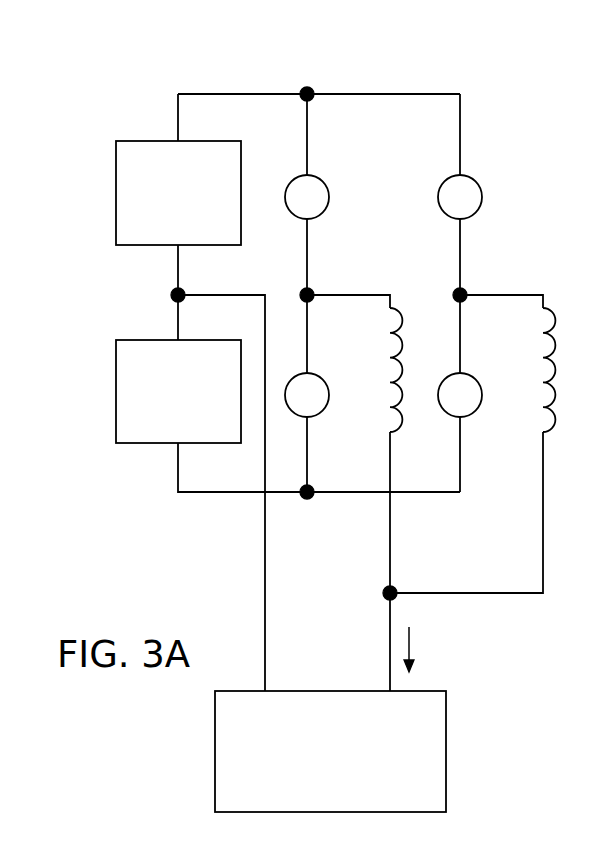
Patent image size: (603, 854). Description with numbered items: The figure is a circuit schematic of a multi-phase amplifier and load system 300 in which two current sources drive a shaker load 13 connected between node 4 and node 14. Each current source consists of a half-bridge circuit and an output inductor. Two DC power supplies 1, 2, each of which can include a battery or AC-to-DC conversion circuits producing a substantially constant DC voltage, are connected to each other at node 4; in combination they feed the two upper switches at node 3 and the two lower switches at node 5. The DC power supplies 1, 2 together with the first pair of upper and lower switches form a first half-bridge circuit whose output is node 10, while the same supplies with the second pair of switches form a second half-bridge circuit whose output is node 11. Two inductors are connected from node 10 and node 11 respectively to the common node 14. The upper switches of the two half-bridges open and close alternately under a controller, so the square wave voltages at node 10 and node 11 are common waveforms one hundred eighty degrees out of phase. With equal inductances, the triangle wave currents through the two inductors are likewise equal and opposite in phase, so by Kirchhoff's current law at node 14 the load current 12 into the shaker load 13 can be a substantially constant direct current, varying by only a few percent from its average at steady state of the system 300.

The multi-phase amplifier and load system 300 is at (133, 108).
The DC power supply 1 is at (165, 191).
The DC power supply 2 is at (164, 389).
The node 3 is at (299, 83).
The node 4 is at (168, 295).
The node 5 is at (300, 502).
The node 10 is at (303, 291).
The node 11 is at (455, 291).
The load current 12 is at (424, 649).
The shaker load 13 is at (347, 690).
The node 14 is at (378, 594).